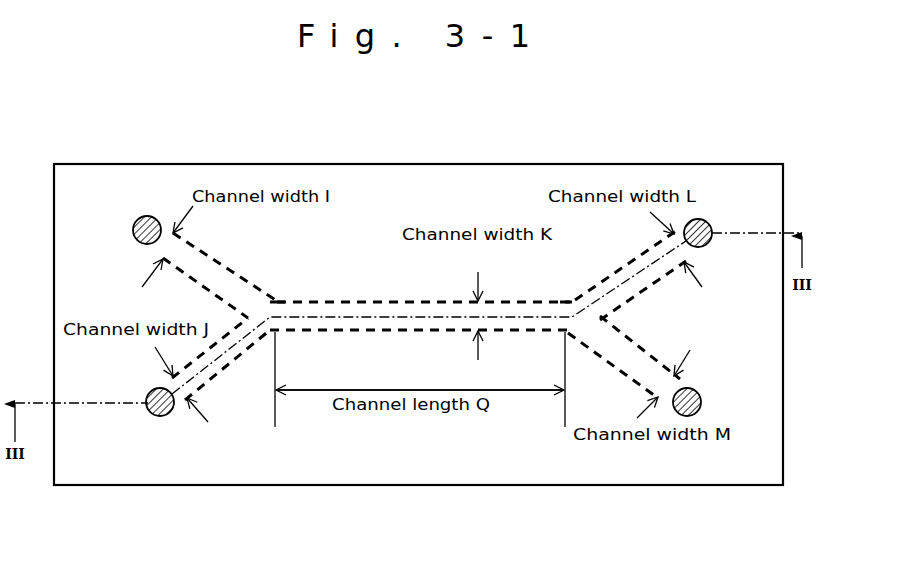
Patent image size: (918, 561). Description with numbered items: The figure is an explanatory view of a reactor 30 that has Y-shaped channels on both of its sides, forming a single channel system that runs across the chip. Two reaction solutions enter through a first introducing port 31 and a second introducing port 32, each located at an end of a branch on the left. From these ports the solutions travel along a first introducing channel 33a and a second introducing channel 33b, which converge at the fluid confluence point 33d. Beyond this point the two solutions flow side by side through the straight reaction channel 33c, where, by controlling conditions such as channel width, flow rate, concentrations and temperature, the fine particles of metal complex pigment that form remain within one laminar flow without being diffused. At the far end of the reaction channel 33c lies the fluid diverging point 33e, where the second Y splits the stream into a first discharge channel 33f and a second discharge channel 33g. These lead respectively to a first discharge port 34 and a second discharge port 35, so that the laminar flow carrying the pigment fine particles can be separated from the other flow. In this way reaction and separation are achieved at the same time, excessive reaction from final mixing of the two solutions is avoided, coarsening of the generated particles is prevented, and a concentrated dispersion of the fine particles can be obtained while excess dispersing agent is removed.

The reactor 30 is at (648, 164).
The introducing port 31 is at (137, 221).
The introducing port 32 is at (149, 396).
The introducing channel 33a is at (232, 279).
The introducing channel 33b is at (212, 377).
The reaction channel 33c is at (380, 305).
The fluid confluence point 33d is at (277, 301).
The fluid diverging point 33e is at (570, 310).
The discharge channel 33f is at (622, 276).
The discharge channel 33g is at (615, 362).
The discharge port 34 is at (710, 224).
The discharge port 35 is at (700, 401).